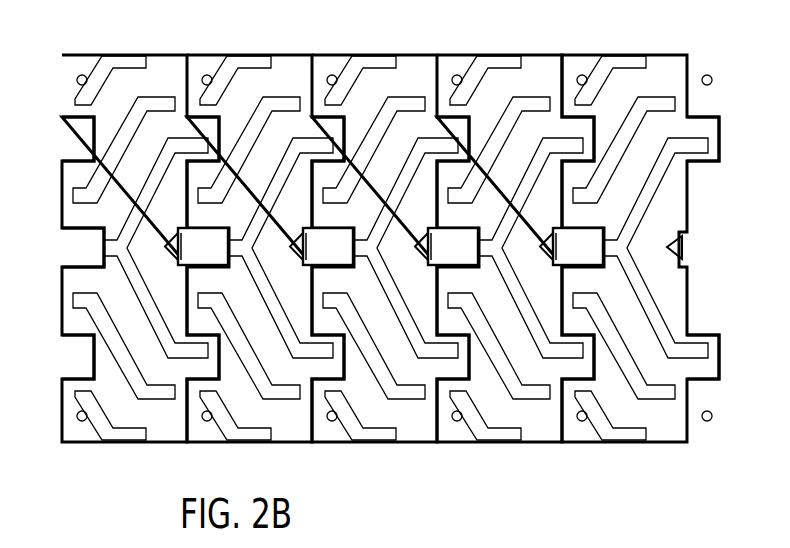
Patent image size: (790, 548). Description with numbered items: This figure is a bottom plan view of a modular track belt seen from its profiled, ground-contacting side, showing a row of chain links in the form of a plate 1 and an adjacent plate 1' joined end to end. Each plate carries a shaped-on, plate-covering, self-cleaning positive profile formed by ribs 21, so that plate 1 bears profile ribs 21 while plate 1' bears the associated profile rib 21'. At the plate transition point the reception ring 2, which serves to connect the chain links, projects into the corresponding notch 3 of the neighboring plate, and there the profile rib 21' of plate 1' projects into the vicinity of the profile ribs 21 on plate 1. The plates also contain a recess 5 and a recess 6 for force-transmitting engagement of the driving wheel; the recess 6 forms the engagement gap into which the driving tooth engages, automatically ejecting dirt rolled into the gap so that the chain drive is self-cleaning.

The plate 1 is at (515, 289).
The plate 1' is at (390, 289).
The reception ring 2 is at (713, 131).
The notch 3 is at (83, 140).
The recess 5 is at (310, 242).
The recess 6 is at (83, 248).
The profile rib 21 is at (410, 220).
The profile rib 21' is at (406, 221).